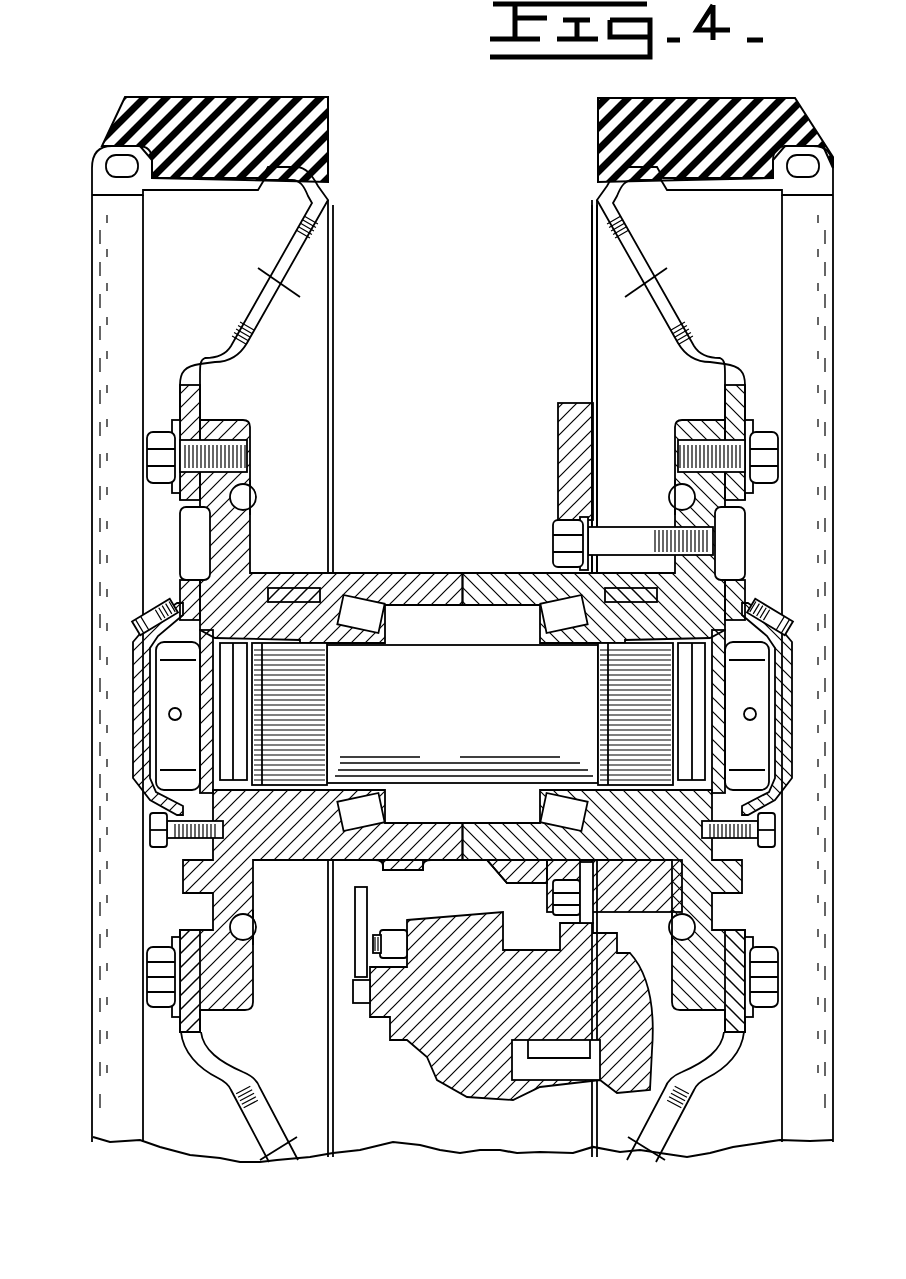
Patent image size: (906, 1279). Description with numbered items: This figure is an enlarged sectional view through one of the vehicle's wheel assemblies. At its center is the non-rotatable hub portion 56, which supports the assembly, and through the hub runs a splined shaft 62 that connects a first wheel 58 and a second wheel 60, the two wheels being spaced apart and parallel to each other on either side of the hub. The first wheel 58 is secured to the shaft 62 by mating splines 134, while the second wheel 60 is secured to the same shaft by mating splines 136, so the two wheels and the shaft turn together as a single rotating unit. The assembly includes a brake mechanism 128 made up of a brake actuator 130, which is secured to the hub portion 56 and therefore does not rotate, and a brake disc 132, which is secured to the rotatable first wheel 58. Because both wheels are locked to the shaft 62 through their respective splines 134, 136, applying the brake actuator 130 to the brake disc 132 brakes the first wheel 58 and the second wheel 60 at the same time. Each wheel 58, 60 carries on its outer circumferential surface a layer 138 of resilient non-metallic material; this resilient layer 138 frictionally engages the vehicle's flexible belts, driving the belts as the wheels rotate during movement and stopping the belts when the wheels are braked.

The layer of resilient non-metallic material 138 is at (316, 136).
The second wheel 60 is at (214, 378).
The first wheel 58 is at (724, 368).
The brake disc 132 is at (570, 430).
The hub portion 56 is at (452, 588).
The splined shaft 62 is at (484, 688).
The mating splines 136 is at (322, 713).
The mating splines 134 is at (600, 703).
The brake actuator 130 is at (482, 918).
The brake mechanism 128 is at (432, 1094).